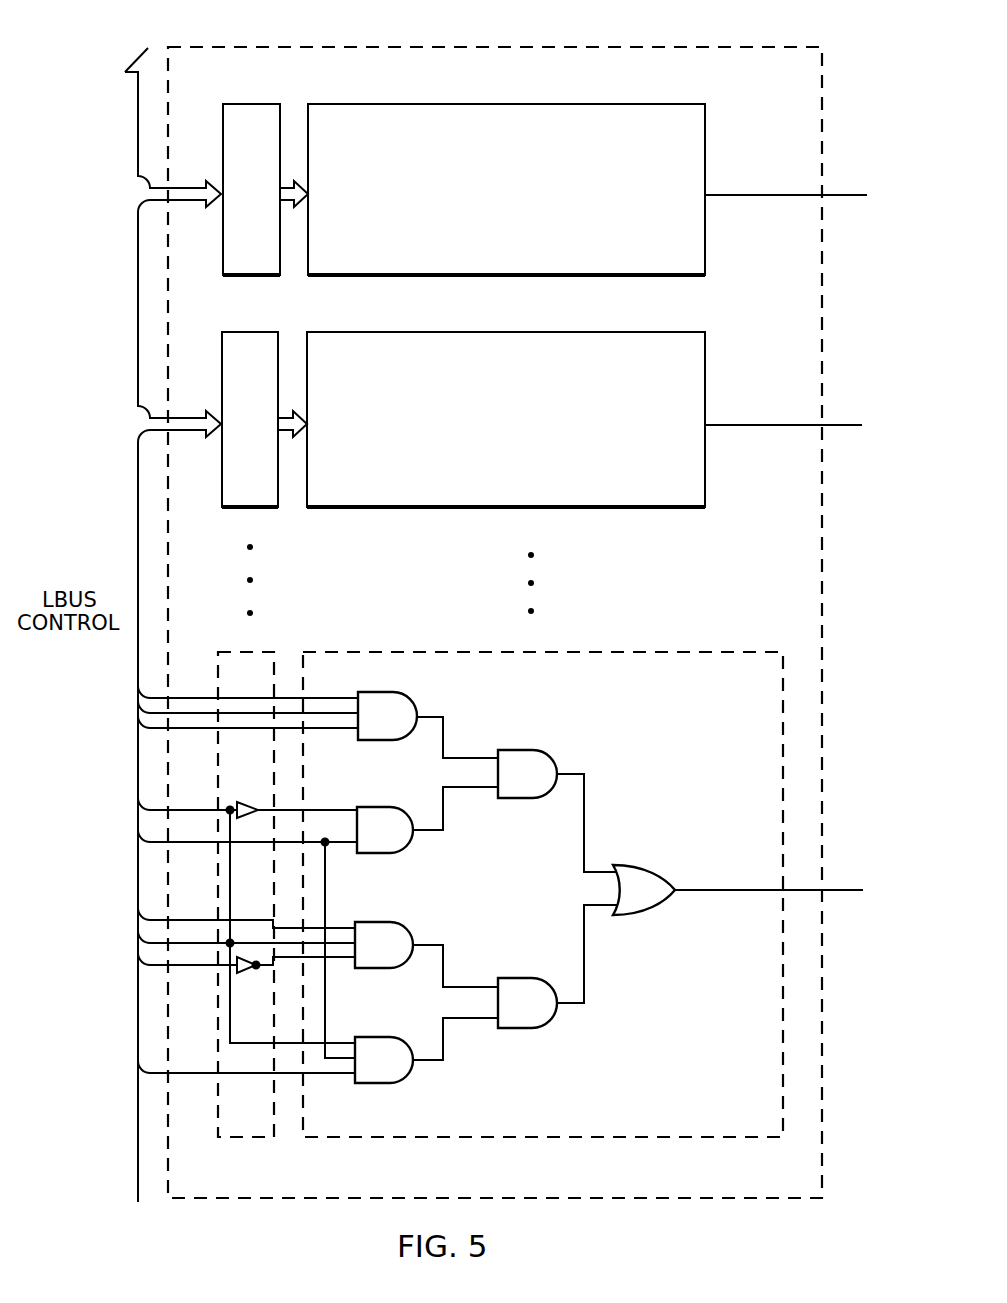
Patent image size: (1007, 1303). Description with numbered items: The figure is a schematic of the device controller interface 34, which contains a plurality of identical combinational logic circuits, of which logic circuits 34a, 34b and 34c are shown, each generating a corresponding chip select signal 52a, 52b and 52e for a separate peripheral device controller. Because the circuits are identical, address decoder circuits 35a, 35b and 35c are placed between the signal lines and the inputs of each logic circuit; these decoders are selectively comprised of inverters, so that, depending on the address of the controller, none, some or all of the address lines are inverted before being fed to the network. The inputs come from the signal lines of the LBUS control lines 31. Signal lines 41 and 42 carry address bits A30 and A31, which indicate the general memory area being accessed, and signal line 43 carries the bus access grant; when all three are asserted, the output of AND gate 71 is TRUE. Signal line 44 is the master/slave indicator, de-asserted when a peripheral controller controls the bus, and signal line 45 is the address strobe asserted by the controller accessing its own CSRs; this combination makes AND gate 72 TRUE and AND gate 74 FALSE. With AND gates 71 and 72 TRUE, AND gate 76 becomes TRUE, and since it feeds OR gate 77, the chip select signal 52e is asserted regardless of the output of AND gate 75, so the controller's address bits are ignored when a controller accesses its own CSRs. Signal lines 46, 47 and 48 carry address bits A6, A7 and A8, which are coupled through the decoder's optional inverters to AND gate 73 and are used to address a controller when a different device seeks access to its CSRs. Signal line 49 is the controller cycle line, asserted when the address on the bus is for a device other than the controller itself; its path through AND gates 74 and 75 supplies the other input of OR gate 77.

The LBUS control lines 31 is at (148, 48).
The device controller interface 34 is at (812, 47).
The combinational logic circuit 34a is at (705, 157).
The combinational logic circuit 34b is at (705, 392).
The combinational logic circuit 34c is at (690, 652).
The address decoder circuit 35a is at (255, 103).
The address decoder circuit 35b is at (255, 331).
The address decoder circuit 35c is at (243, 652).
The signal line 41 is at (181, 697).
The signal line 42 is at (198, 712).
The signal line 43 is at (207, 729).
The signal line 44 is at (210, 810).
The signal line 45 is at (211, 826).
The signal line 46 is at (182, 920).
The signal line 47 is at (198, 943).
The signal line 48 is at (199, 967).
The signal line 49 is at (209, 1073).
The chip select signal 52a is at (856, 179).
The chip select signal 52b is at (845, 421).
The chip select signal 52e is at (860, 883).
The AND gate 71 is at (403, 694).
The AND gate 72 is at (389, 808).
The AND gate 73 is at (420, 911).
The AND gate 74 is at (392, 1036).
The AND gate 75 is at (528, 960).
The AND gate 76 is at (547, 758).
The OR gate 77 is at (673, 860).